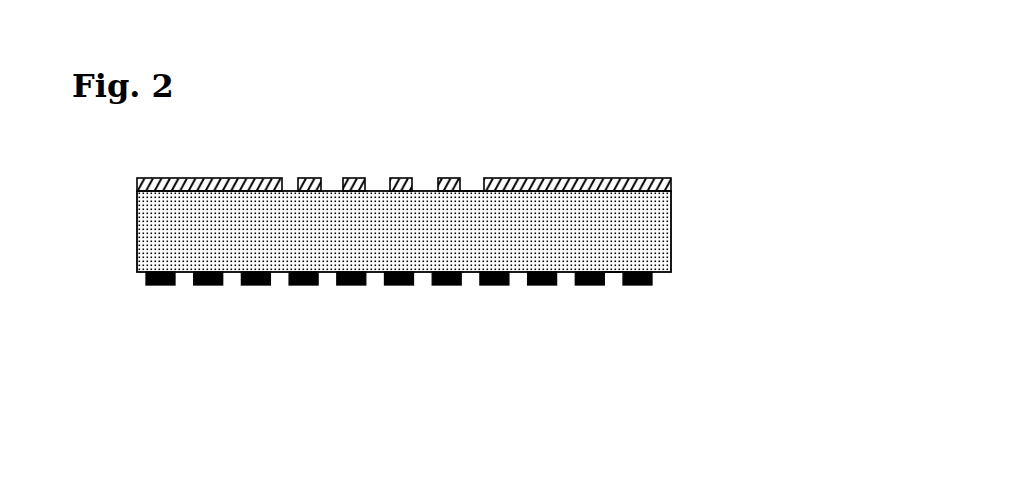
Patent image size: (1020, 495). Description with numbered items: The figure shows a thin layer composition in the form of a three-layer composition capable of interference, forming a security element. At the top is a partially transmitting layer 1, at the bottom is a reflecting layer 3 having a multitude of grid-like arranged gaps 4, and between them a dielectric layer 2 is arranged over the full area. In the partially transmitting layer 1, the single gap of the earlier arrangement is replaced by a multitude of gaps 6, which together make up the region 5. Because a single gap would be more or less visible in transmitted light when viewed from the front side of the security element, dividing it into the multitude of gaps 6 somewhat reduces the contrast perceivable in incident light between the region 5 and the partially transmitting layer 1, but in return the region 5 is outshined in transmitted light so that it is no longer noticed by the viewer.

The partially transmitting layer 1 is at (673, 186).
The dielectric layer 2 is at (645, 241).
The reflecting layer 3 is at (652, 283).
The grid-like arranged gaps 4 is at (613, 285).
The gap region 5 is at (384, 143).
The multitude of gaps 6 is at (472, 180).